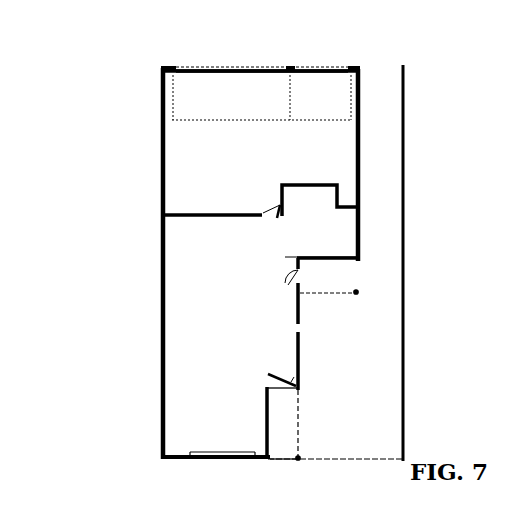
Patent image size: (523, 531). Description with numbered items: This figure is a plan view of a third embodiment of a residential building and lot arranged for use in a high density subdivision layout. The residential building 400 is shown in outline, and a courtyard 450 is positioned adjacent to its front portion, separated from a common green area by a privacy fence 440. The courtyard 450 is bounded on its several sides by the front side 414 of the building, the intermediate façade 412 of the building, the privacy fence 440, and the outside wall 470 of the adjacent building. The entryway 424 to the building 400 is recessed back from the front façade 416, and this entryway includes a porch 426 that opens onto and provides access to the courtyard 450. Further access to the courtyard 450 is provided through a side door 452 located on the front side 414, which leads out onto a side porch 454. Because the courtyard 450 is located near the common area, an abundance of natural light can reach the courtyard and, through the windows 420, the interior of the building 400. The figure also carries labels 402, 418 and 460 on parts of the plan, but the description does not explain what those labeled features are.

The residential building 400 is at (131, 255).
The room 402 is at (250, 190).
The intermediate façade 412 is at (333, 254).
The front side 414 is at (296, 318).
The front façade 416 is at (215, 463).
The front wall 418 is at (262, 70).
The windows 420 is at (262, 435).
The entryway 424 is at (268, 374).
The porch 426 is at (283, 448).
The privacy fence 440 is at (349, 465).
The courtyard 450 is at (350, 382).
The side door 452 is at (285, 268).
The side porch 454 is at (339, 273).
The fence 460 is at (388, 125).
The outside wall of the adjacent building 470 is at (407, 272).